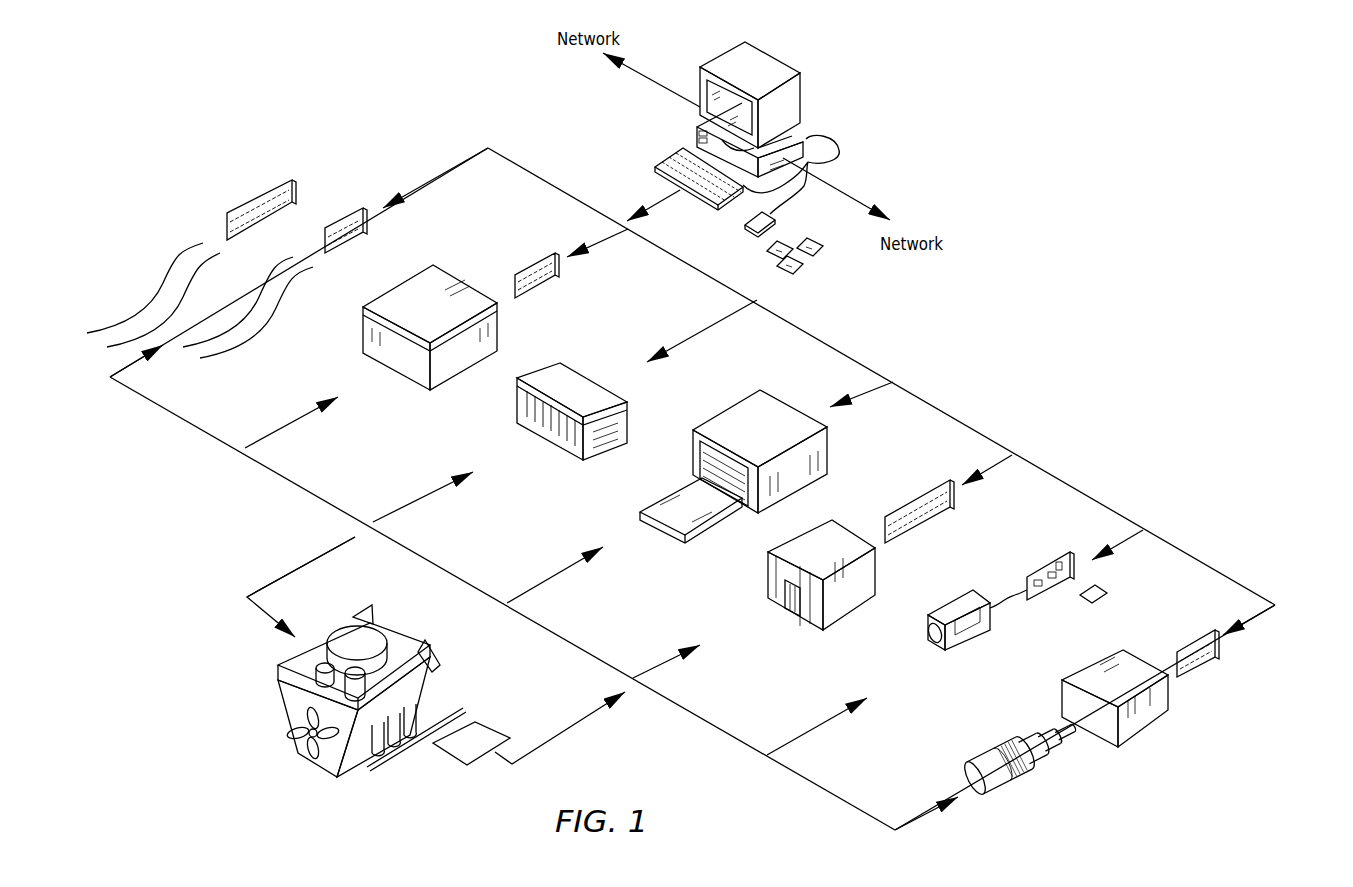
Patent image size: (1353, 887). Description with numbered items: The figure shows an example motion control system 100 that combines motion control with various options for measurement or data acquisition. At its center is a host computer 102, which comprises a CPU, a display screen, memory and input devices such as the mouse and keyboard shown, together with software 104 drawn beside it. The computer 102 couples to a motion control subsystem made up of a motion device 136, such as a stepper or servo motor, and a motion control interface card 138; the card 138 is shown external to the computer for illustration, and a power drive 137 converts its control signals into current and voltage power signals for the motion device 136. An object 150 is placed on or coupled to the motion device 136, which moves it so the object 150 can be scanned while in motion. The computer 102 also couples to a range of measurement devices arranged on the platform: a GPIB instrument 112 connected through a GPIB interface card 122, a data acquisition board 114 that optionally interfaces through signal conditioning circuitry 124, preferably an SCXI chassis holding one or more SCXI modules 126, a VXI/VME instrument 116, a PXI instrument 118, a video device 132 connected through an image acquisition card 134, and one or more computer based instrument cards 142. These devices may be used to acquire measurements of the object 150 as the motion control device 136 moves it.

The motion control system 100 is at (1150, 102).
The host computer 102 is at (766, 126).
The software 104 is at (841, 284).
The GPIB instrument 112 is at (420, 326).
The data acquisition board 114 is at (1018, 447).
The VXI/VME instrument 116 is at (733, 454).
The PXI instrument 118 is at (572, 380).
The GPIB interface card 122 is at (515, 253).
The signal conditioning circuitry 124 is at (788, 607).
The SCXI module 126 is at (785, 637).
The video device 132 is at (952, 664).
The image acquisition card 134 is at (1042, 571).
The motion device 136 is at (1091, 780).
The power drive 137 is at (1172, 714).
The motion control interface card 138 is at (1248, 678).
The computer based instrument card 142 is at (261, 178).
The object 150 is at (341, 691).